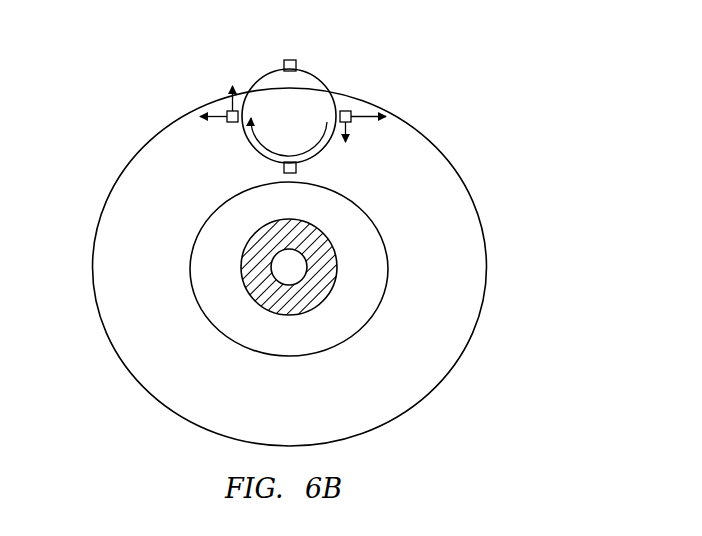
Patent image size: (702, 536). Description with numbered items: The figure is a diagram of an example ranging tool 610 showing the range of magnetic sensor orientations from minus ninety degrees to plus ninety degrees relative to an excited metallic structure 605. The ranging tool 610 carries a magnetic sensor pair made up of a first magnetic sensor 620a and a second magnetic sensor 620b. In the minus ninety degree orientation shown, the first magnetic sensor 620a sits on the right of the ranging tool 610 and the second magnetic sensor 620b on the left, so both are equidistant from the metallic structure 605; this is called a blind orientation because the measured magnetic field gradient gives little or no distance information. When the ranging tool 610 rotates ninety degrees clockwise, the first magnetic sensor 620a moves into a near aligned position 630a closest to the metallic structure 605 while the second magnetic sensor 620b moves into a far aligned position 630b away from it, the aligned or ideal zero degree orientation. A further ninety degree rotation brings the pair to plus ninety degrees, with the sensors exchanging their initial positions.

The excited metallic structure 605 is at (325, 300).
The ranging tool 610 is at (307, 72).
The first magnetic sensor 620a is at (351, 122).
The second magnetic sensor 620b is at (232, 123).
The near aligned position 630a is at (290, 174).
The far aligned position 630b is at (290, 59).